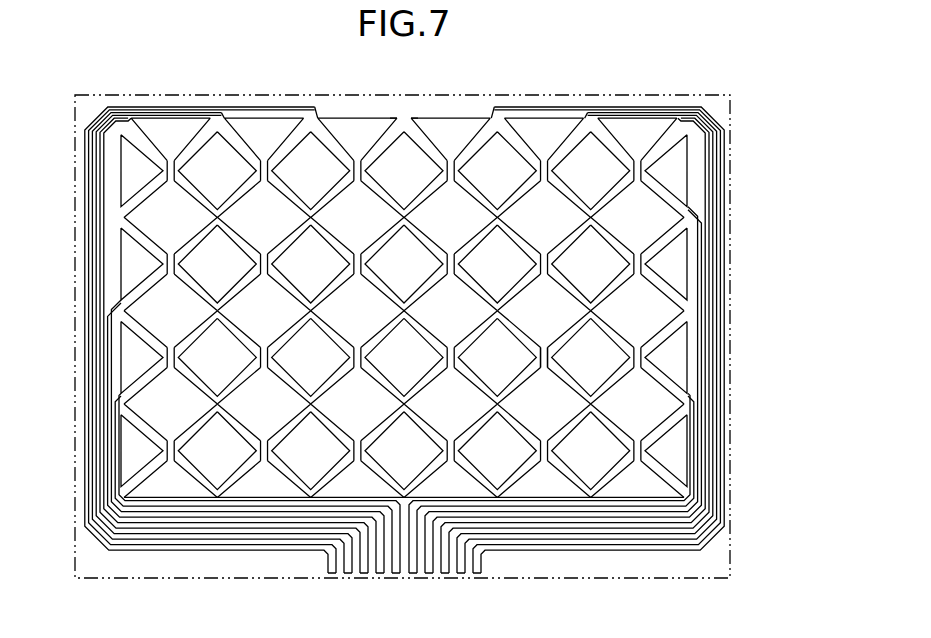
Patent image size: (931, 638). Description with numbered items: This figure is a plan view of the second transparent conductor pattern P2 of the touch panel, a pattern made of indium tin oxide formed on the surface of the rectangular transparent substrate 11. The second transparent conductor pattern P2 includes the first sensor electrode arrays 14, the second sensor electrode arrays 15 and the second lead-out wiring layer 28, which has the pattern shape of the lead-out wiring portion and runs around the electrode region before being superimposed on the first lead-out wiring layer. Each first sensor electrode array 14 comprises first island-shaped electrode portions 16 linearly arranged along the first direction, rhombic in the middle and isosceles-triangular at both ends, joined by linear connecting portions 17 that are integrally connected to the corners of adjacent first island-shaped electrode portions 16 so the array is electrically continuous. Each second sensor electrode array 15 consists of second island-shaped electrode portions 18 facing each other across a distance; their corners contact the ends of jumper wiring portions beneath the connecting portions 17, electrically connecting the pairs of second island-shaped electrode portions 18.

The transparent substrate 11 is at (736, 103).
The second lead-out wiring layer 28 is at (724, 262).
The connecting portion 17 is at (547, 352).
The second sensor electrode array 15 is at (682, 361).
The second island-shaped electrode portion 18 is at (598, 368).
The first sensor electrode array 14 is at (539, 490).
The first island-shaped electrode portion 16 is at (555, 412).
The second transparent conductor pattern P2 is at (402, 117).